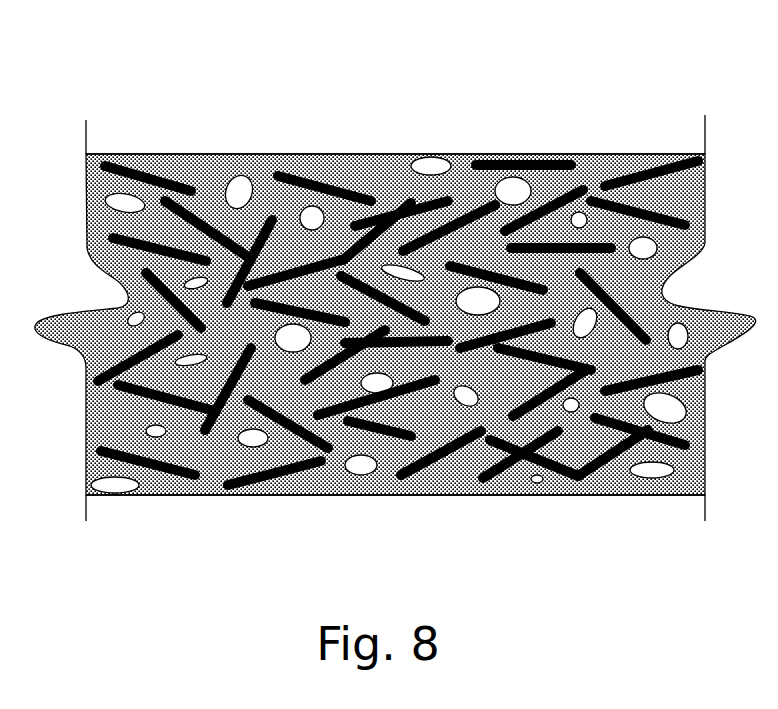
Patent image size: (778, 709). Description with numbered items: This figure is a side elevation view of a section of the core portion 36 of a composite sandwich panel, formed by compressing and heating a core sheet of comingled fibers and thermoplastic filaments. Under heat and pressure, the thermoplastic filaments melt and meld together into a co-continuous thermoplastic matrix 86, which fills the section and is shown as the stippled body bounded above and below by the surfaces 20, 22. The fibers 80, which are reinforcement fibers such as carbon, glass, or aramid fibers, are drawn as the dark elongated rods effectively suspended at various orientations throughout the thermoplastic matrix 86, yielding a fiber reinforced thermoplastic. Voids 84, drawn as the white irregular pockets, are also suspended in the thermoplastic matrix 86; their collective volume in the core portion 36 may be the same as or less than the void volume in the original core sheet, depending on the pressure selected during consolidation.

The core portion 36 is at (567, 56).
The first surface 20 is at (287, 146).
The second surface 22 is at (148, 487).
The fibers 80 is at (203, 207).
The voids 84 is at (112, 192).
The thermoplastic matrix 86 is at (332, 160).